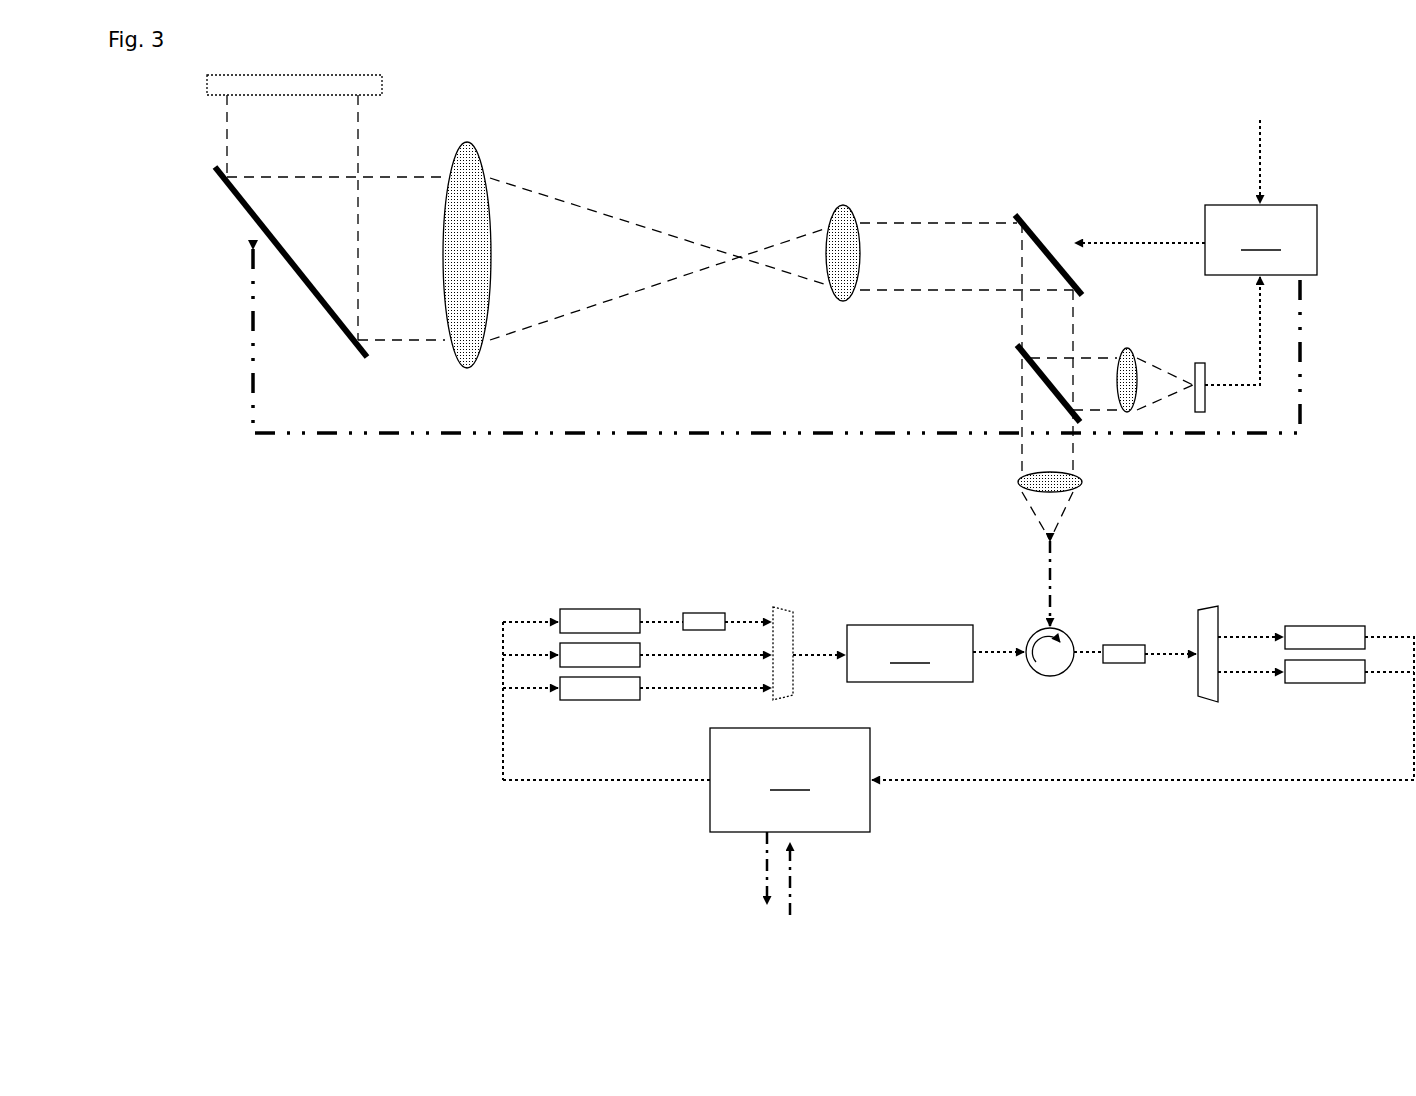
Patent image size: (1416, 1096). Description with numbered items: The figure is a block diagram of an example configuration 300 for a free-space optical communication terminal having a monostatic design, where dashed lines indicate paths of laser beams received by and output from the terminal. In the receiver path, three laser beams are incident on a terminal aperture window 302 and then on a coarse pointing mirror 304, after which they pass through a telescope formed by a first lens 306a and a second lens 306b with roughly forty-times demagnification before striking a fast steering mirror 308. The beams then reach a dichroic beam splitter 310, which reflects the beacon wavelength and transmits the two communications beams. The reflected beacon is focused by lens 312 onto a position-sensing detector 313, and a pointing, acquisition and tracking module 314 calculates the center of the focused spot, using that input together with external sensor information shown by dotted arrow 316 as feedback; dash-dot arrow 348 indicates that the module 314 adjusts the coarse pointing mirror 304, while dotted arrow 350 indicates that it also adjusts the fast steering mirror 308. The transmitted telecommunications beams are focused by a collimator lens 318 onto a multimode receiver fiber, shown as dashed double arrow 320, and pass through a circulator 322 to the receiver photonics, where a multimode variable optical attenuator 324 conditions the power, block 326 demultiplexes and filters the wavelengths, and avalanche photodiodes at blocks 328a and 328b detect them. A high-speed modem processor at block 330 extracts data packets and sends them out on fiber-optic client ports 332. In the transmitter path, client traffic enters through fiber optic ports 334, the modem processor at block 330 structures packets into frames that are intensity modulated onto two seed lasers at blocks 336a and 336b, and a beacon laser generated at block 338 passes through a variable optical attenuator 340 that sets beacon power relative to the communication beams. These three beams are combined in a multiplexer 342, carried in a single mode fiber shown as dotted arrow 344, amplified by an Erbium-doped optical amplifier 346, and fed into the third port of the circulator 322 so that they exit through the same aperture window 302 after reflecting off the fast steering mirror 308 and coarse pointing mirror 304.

The example configuration 300 is at (158, 105).
The terminal aperture window 302 is at (382, 88).
The coarse pointing mirror 304 is at (250, 213).
The first lens 306a is at (478, 152).
The second lens 306b is at (858, 212).
The fast steering mirror 308 is at (1022, 215).
The dichroic beam splitter 310 is at (1018, 357).
The lens 312 is at (1128, 347).
The position-sensing detector 313 is at (1200, 362).
The pointing, acquisition and tracking module 314 is at (1261, 295).
The dotted arrow 316 is at (1262, 133).
The collimator lens 318 is at (1082, 482).
The dashed double arrow 320 is at (1052, 590).
The circulator 322 is at (1045, 676).
The multimode variable optical attenuator 324 is at (1120, 665).
The demultiplexing and filtering block 326 is at (1203, 605).
The avalanche photodiode block 328a is at (1325, 625).
The avalanche photodiode block 328b is at (1325, 685).
The modem processor block 330 is at (790, 780).
The fiber-optic client ports 332 is at (765, 885).
The fiber optic ports 334 is at (792, 878).
The seed laser block 336a is at (585, 700).
The seed laser block 336b is at (600, 667).
The beacon laser block 338 is at (600, 607).
The variable optical attenuator 340 is at (700, 613).
The multiplexer 342 is at (780, 605).
The dotted arrow 344 is at (822, 652).
The Erbium-doped optical amplifier 346 is at (910, 653).
The dash-dot arrow 348 is at (327, 434).
The dotted arrow 350 is at (1160, 240).